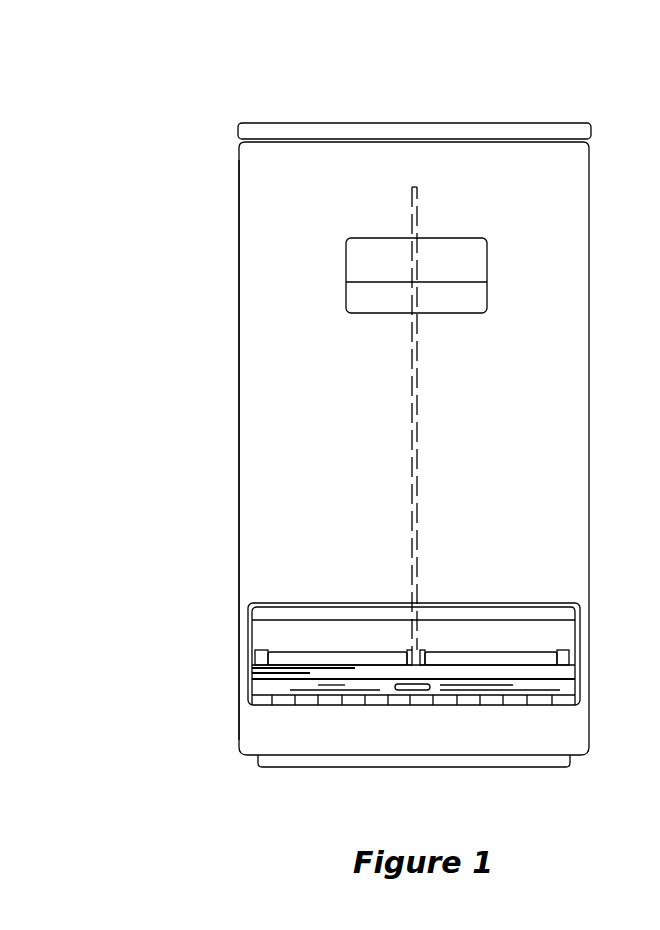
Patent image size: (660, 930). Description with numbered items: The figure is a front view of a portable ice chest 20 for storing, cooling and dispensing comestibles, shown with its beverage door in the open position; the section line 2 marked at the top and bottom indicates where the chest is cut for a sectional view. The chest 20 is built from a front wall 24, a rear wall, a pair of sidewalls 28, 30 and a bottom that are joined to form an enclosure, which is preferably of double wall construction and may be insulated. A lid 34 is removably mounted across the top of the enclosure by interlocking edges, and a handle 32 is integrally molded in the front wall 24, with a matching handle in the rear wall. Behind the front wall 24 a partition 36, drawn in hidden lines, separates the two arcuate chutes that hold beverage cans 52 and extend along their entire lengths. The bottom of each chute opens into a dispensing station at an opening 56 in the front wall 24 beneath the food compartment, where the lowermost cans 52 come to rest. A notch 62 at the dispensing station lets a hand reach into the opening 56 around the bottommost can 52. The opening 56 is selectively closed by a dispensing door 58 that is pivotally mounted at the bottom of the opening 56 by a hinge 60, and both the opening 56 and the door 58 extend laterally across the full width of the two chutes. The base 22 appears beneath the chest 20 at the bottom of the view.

The section line 2- 2 is at (448, 168).
The chest 20 is at (212, 227).
The base 22 is at (525, 757).
The front wall 24 is at (464, 474).
The sidewall 28 is at (238, 353).
The sidewall 30 is at (589, 322).
The handle 32 is at (488, 261).
The lid 34 is at (512, 122).
The partition 36 is at (417, 371).
The can 52 is at (260, 660).
The opening 56 is at (565, 613).
The dispensing door 58 is at (565, 675).
The hinge 60 is at (257, 702).
The notch 62 is at (262, 632).